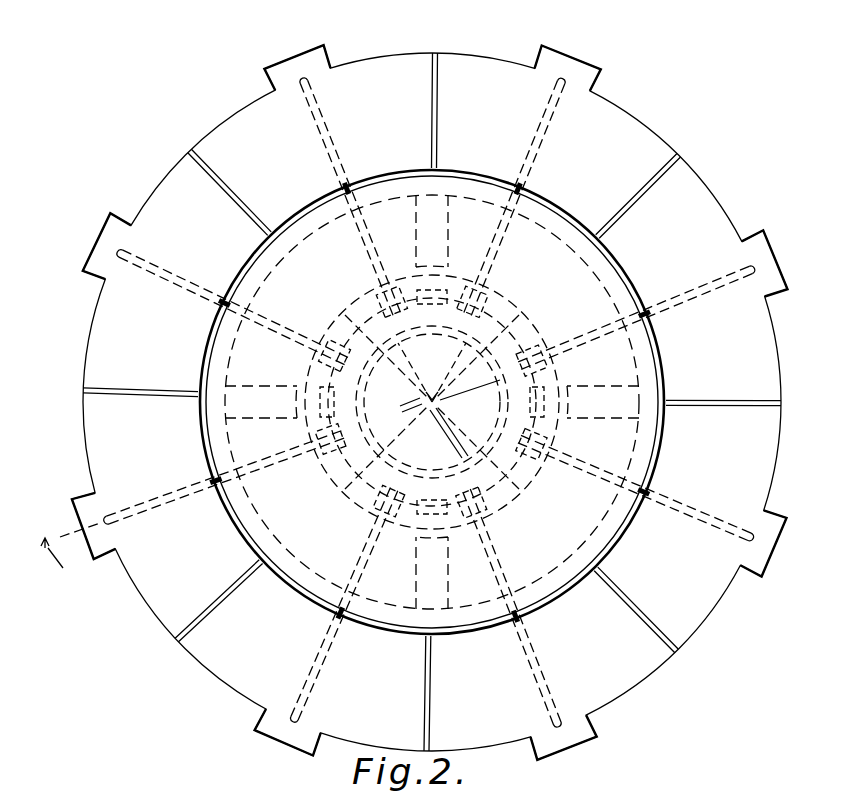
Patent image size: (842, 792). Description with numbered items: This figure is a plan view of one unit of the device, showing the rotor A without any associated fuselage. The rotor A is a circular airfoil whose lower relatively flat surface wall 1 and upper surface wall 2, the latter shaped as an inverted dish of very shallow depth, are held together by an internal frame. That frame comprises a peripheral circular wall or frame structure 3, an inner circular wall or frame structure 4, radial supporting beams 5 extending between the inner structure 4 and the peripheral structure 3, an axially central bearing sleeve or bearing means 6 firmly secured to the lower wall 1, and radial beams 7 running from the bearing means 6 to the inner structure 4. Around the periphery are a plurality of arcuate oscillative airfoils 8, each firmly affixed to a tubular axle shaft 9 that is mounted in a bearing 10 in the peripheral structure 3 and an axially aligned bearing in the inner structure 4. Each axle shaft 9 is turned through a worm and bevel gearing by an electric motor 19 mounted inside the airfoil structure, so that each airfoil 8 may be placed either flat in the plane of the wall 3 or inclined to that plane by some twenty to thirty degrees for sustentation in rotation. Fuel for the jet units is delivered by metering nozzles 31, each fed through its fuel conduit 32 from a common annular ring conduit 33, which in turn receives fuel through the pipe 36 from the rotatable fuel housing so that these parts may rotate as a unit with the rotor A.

The lower surface wall 1 is at (70, 552).
The upper surface wall 2 is at (432, 402).
The peripheral circular wall or frame structure 3 is at (276, 268).
The inner circular wall or frame structure 4 is at (335, 310).
The radial supporting beams 5 is at (450, 238).
The bearing sleeve or bearing means 6 is at (432, 396).
The radial beams 7 is at (458, 374).
The oscillative airfoils 8 is at (430, 402).
The axle shaft 9 is at (435, 396).
The bearings 10 is at (264, 73).
The electric motor 19 is at (459, 402).
The metering nozzle 31 is at (300, 88).
The fuel conduit 32 is at (338, 160).
The annular ring conduit 33 is at (446, 434).
The pipe 36 is at (418, 405).
The rotor A is at (735, 636).